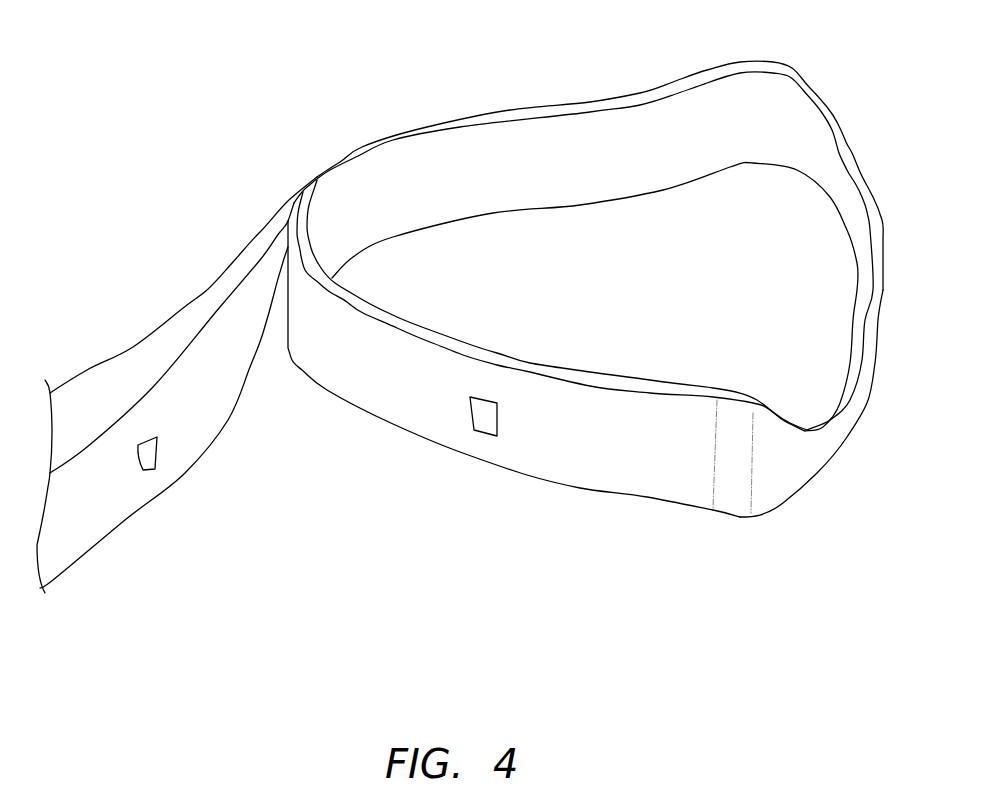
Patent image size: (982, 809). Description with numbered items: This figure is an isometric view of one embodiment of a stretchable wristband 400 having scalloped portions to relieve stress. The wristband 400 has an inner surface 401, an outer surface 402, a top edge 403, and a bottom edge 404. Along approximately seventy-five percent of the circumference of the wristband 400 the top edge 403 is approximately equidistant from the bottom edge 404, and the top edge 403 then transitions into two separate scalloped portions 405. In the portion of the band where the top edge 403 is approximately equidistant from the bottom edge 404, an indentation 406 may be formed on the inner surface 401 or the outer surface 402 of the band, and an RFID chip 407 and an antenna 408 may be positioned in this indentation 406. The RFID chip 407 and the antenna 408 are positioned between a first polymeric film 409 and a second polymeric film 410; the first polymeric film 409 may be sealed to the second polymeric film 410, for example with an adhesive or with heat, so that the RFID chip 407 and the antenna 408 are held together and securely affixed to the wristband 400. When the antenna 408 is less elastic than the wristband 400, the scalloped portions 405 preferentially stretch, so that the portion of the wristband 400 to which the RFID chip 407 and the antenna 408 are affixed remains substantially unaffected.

The wristband 400 is at (239, 96).
The inner surface 401 is at (482, 162).
The outer surface 402 is at (743, 493).
The top edge 403 is at (545, 104).
The bottom edge 404 is at (660, 190).
The scalloped portions 405 is at (813, 77).
The indentation 406 is at (400, 420).
The RFID chip 407 is at (132, 467).
The antenna 408 is at (202, 427).
The first polymeric film 409 is at (417, 360).
The second polymeric film 410 is at (135, 347).